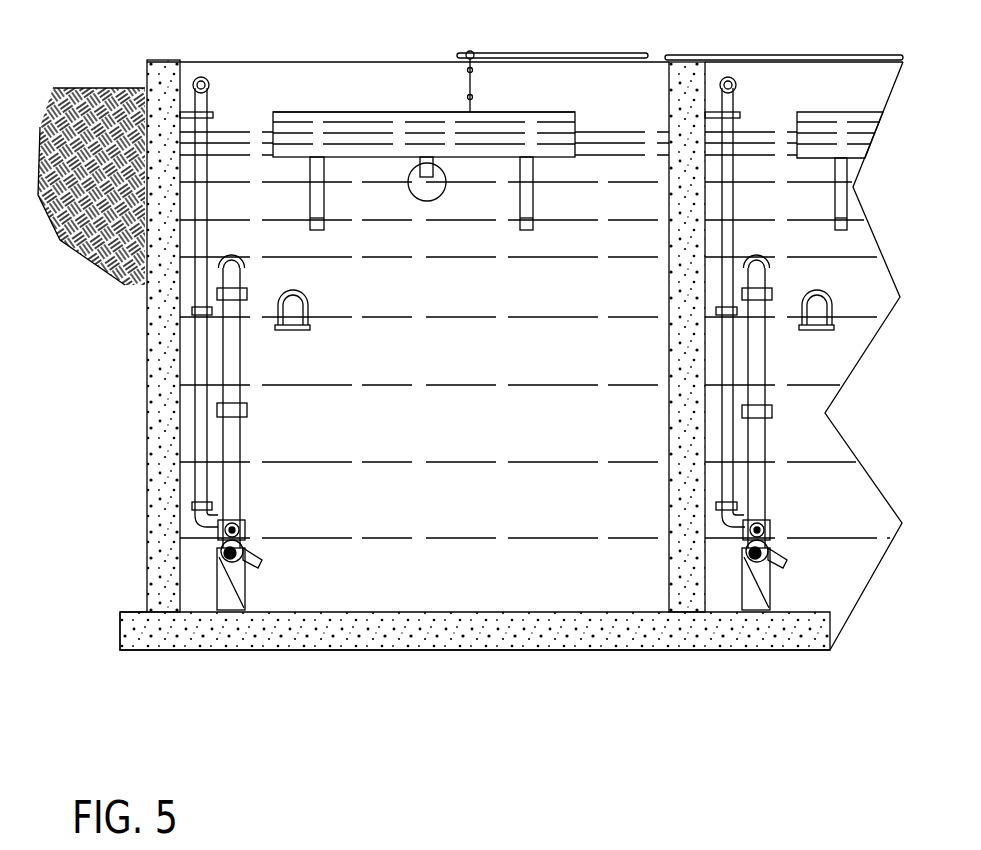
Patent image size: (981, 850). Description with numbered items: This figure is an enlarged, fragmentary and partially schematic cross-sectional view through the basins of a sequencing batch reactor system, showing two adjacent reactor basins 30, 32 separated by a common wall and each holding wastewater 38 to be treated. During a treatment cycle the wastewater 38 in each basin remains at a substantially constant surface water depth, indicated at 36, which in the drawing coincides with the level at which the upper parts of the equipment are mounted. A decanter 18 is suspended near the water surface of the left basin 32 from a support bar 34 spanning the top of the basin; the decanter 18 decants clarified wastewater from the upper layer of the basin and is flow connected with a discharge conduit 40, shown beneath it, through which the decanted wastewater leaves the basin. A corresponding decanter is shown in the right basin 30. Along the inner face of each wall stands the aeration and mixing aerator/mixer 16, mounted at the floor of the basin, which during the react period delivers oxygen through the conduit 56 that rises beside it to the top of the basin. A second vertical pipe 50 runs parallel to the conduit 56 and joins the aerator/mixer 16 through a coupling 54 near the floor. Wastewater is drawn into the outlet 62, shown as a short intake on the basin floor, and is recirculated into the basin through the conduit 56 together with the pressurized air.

The aeration and mixing aerator/mixer 16 is at (245, 542).
The decanter 18 is at (535, 135).
The sequencing batch reactor basin 30 is at (856, 101).
The sequencing batch reactor basin 32 is at (350, 101).
The support bar 34 is at (472, 52).
The surface water depth 36 is at (215, 115).
The wastewater 38 is at (470, 370).
The discharge conduit 40 is at (426, 186).
The discharge pipe 50 is at (200, 377).
The pump coupling 54 is at (240, 524).
The conduit 56 is at (232, 440).
The outlet 62 is at (296, 310).